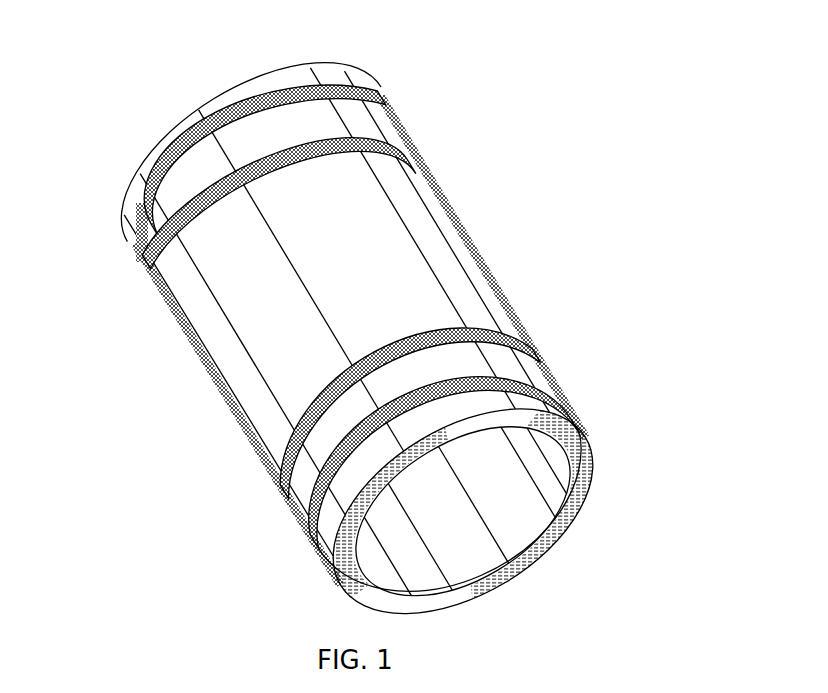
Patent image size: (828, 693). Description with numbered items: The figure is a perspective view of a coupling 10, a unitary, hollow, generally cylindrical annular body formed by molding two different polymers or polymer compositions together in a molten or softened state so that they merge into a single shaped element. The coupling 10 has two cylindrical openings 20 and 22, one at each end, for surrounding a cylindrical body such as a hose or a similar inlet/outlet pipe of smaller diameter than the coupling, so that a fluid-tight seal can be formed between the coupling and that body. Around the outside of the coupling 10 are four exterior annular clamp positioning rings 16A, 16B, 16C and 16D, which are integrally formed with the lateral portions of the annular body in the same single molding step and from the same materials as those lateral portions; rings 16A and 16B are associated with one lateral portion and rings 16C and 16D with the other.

The coupling 10 is at (645, 205).
The cylindrical opening 20 is at (144, 97).
The cylindrical opening 22 is at (474, 513).
The exterior annular clamp positioning ring 16A is at (340, 92).
The exterior annular clamp positioning ring 16B is at (400, 150).
The exterior annular clamp positioning ring 16C is at (283, 452).
The exterior annular clamp positioning ring 16D is at (317, 495).